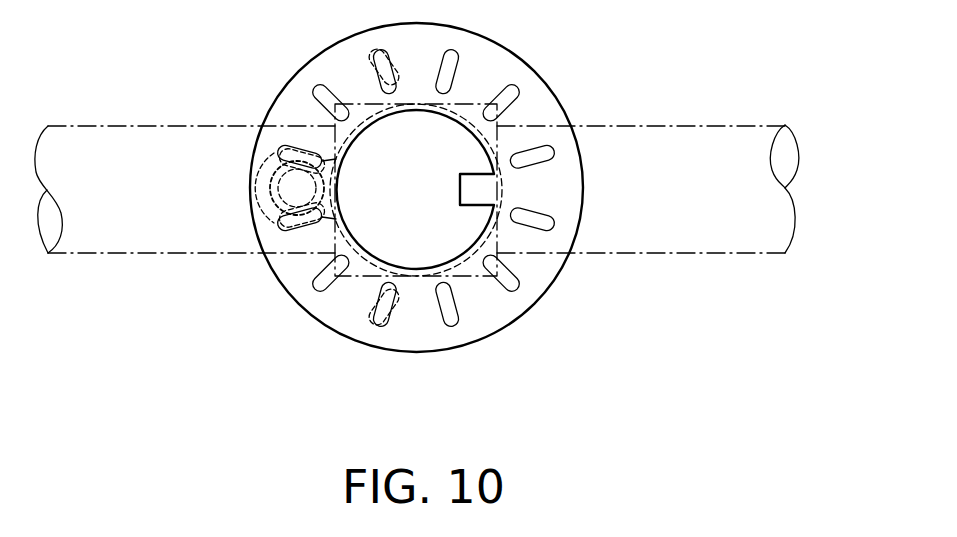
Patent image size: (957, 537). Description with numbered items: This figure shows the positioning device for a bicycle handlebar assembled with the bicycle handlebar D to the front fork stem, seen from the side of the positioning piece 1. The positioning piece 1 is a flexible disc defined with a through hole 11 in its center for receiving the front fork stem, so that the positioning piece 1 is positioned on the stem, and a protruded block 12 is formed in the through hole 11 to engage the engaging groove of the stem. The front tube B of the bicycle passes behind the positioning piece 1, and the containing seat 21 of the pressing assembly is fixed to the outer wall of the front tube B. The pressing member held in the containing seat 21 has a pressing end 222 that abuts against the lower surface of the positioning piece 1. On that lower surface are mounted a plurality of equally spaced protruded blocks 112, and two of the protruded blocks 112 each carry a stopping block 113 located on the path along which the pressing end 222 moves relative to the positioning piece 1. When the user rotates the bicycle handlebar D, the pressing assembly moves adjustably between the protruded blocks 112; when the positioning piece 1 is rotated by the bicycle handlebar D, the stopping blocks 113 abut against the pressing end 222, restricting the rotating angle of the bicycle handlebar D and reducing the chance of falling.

The positioning piece 1 is at (558, 300).
The through hole 11 is at (443, 153).
The protruded block 12 is at (472, 183).
The protruded blocks 112 is at (318, 286).
The stopping block 113 is at (372, 62).
The containing seat 21 is at (252, 212).
The pressing end 222 is at (272, 158).
The front tube B is at (467, 260).
The bicycle handlebar D is at (705, 243).